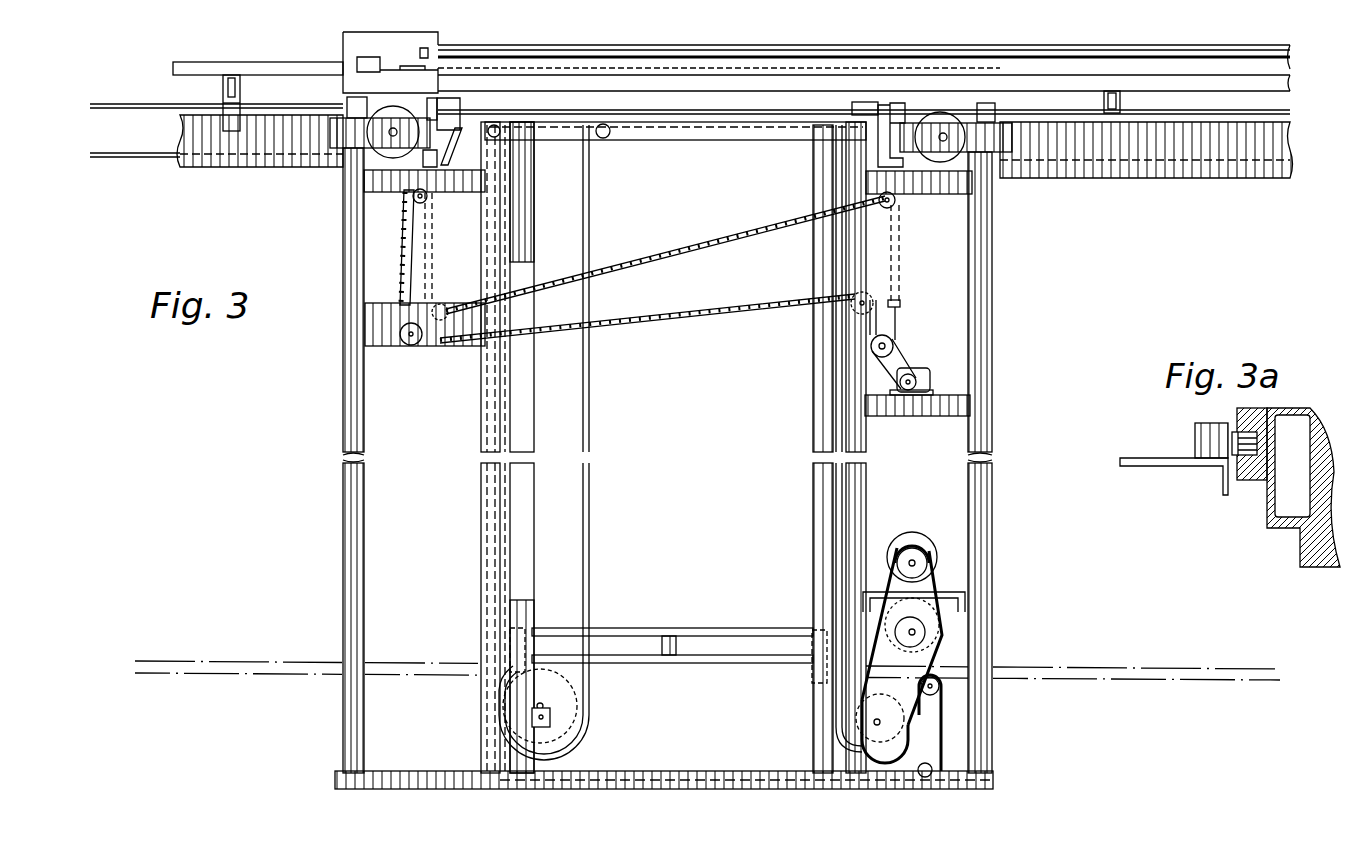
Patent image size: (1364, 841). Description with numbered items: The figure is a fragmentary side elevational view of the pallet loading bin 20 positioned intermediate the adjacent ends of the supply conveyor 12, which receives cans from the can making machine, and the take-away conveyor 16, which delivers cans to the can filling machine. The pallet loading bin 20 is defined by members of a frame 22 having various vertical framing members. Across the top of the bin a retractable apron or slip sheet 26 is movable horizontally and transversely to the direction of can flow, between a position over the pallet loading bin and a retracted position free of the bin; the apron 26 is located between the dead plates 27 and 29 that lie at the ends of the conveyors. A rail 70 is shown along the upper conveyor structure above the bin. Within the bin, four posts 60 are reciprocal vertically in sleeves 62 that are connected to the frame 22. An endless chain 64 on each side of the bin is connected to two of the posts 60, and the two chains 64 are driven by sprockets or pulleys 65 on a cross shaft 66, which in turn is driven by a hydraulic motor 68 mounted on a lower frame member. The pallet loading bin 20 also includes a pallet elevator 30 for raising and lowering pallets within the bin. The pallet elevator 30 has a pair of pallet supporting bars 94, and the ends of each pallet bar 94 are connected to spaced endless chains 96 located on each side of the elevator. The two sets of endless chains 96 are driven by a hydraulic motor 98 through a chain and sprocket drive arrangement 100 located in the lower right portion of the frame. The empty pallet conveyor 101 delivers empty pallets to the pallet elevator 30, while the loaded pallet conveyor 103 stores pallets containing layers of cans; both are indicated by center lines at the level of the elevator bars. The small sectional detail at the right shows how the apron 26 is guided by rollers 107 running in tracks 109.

In FIG. 3, the supply conveyor 12 is at (1195, 165).
In FIG. 3, the take-away conveyor 16 is at (144, 158).
In FIG. 3, the pallet loading bin 20 is at (760, 155).
In FIG. 3, the frame 22 is at (343, 518).
In FIG. 3, the retractable apron 26 is at (706, 112).
In FIG. 3A, the retractable apron 26 is at (1158, 463).
In FIG. 3, the dead plate 27 is at (410, 106).
In FIG. 3, the dead plate 29 is at (956, 137).
In FIG. 3, the pallet elevator 30 is at (602, 626).
In FIG. 3, the posts 60 is at (433, 232).
In FIG. 3, the sleeves 62 is at (428, 160).
In FIG. 3, the endless chain 64 is at (672, 259).
In FIG. 3, the sprockets 65 is at (895, 340).
In FIG. 3, the cross shaft 66 is at (891, 340).
In FIG. 3, the hydraulic motor 68 is at (931, 379).
In FIG. 3, the rail 70 is at (586, 66).
In FIG. 3, the pallet supporting bars 94 is at (530, 653).
In FIG. 3, the endless chains 96 is at (838, 520).
In FIG. 3, the hydraulic motor 98 is at (937, 530).
In FIG. 3, the chain and sprocket drive arrangement 100 is at (948, 642).
In FIG. 3, the empty pallet conveyor 101 is at (1185, 672).
In FIG. 3, the loaded pallet conveyor 103 is at (265, 650).
In FIG. 3A, the rollers 107 is at (1233, 434).
In FIG. 3A, the tracks 109 is at (1253, 478).